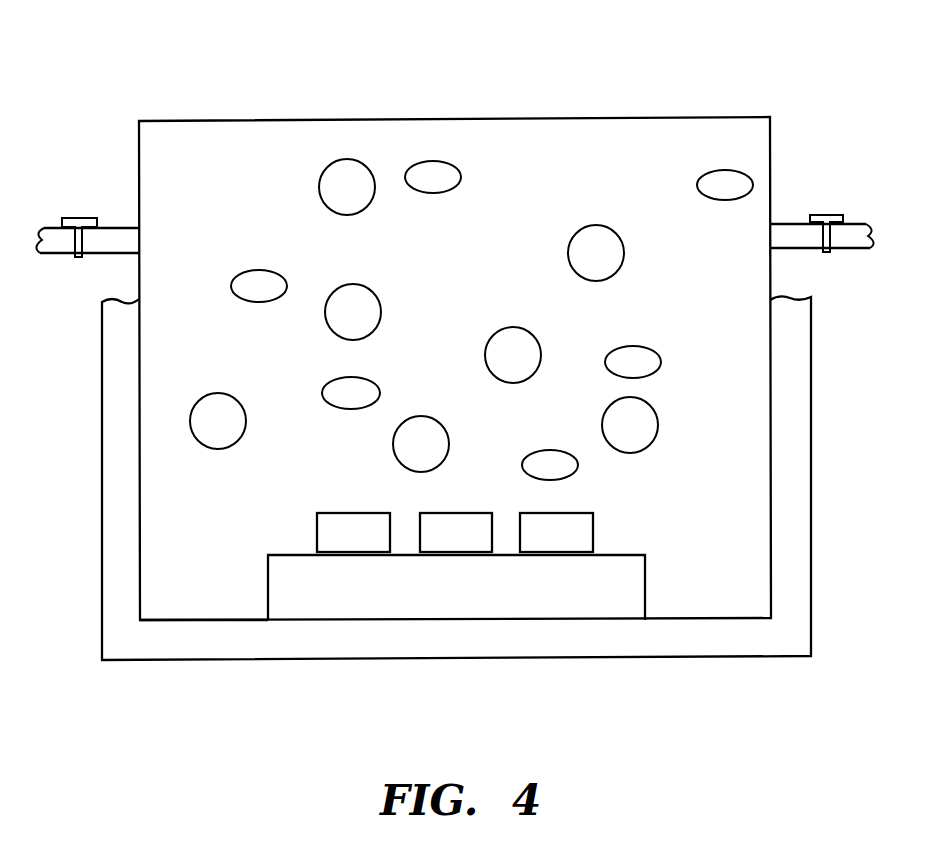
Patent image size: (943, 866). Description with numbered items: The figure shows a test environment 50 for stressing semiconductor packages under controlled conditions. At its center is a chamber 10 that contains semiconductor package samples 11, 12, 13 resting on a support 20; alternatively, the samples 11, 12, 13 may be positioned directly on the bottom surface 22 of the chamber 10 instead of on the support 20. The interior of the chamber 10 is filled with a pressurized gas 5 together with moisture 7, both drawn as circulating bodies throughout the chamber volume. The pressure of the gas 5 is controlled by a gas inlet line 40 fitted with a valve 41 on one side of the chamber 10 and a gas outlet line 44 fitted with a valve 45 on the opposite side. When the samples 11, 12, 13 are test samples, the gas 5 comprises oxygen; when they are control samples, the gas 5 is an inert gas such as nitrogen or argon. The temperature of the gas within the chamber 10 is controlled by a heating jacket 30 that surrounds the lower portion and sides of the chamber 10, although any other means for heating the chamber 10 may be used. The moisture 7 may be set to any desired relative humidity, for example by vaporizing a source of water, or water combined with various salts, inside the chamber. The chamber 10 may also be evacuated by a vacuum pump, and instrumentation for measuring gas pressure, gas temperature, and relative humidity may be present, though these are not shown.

The pressurized gas 5 is at (340, 199).
The moisture 7 is at (426, 188).
The chamber 10 is at (668, 118).
The semiconductor package sample 11 is at (341, 546).
The semiconductor package sample 12 is at (443, 546).
The semiconductor package sample 13 is at (544, 546).
The support 20 is at (572, 602).
The bottom surface 22 is at (196, 619).
The heating jacket 30 is at (572, 652).
The gas inlet line 40 is at (49, 228).
The valve 41 is at (87, 219).
The gas outlet line 44 is at (853, 226).
The valve 45 is at (819, 215).
The test environment 50 is at (449, 106).